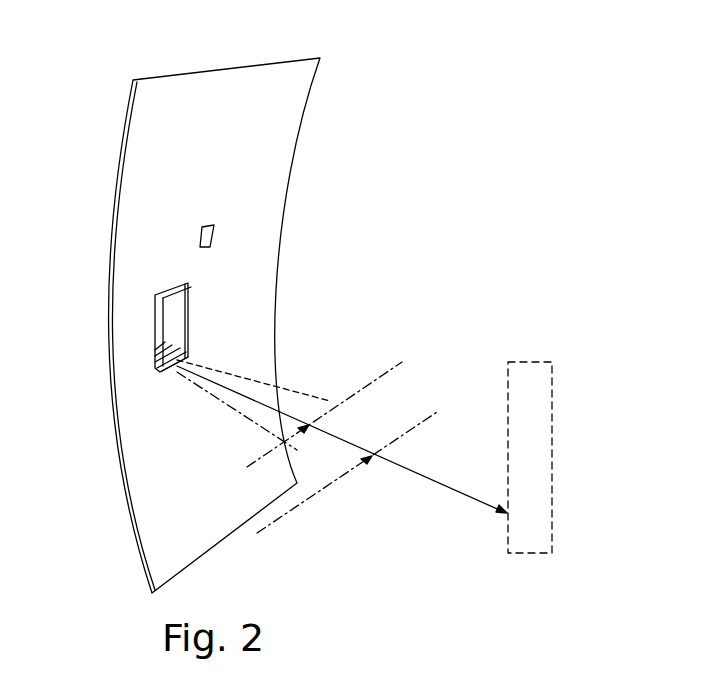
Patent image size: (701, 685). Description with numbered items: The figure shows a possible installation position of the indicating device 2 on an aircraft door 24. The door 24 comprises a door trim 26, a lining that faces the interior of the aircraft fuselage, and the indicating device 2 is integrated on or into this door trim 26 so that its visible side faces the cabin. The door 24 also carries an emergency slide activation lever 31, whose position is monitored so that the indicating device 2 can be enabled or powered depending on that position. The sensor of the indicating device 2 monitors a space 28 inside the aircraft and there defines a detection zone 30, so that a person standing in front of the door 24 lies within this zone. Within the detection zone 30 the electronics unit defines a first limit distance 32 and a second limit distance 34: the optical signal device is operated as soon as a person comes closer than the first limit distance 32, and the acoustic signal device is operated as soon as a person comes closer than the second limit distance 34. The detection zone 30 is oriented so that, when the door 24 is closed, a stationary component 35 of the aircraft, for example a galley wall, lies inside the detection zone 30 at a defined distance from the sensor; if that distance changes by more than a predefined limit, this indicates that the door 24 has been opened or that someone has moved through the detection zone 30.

The aircraft door 24 is at (222, 95).
The door trim 26 is at (233, 193).
The emergency slide activation lever 31 is at (197, 233).
The indicating device 2 is at (190, 330).
The detection zone 30 is at (253, 377).
The space 28 is at (377, 316).
The second limit distance 34 is at (342, 404).
The first limit distance 32 is at (360, 465).
The stationary component 35 is at (543, 396).